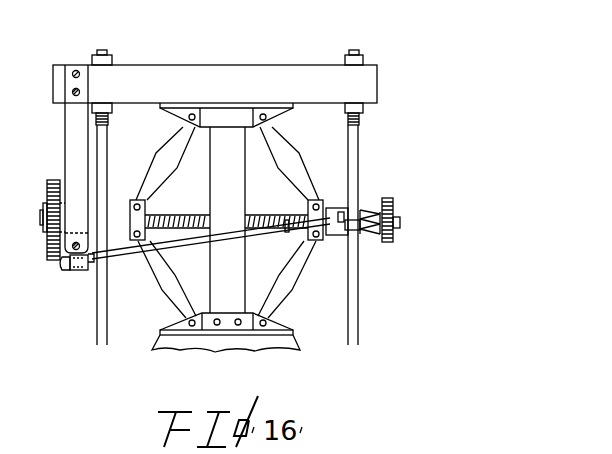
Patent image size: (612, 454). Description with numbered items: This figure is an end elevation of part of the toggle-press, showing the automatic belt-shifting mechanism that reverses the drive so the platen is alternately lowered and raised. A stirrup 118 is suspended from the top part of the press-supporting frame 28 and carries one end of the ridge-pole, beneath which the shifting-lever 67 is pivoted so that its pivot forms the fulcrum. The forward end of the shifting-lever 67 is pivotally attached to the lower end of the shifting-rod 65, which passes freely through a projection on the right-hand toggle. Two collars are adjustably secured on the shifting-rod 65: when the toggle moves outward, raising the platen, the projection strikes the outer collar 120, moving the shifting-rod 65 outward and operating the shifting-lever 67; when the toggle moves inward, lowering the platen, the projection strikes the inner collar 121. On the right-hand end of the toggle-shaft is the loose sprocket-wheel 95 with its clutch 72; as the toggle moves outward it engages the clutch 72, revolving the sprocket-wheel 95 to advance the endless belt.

The press-supporting frame 28 is at (173, 76).
The stirrup 118 is at (76, 148).
The shifting-rod 65 is at (125, 258).
The shifting-lever 67 is at (79, 272).
The inner collar 121 is at (288, 233).
The outer collar 120 is at (343, 210).
The clutch 72 is at (380, 242).
The loose sprocket-wheel 95 is at (391, 200).